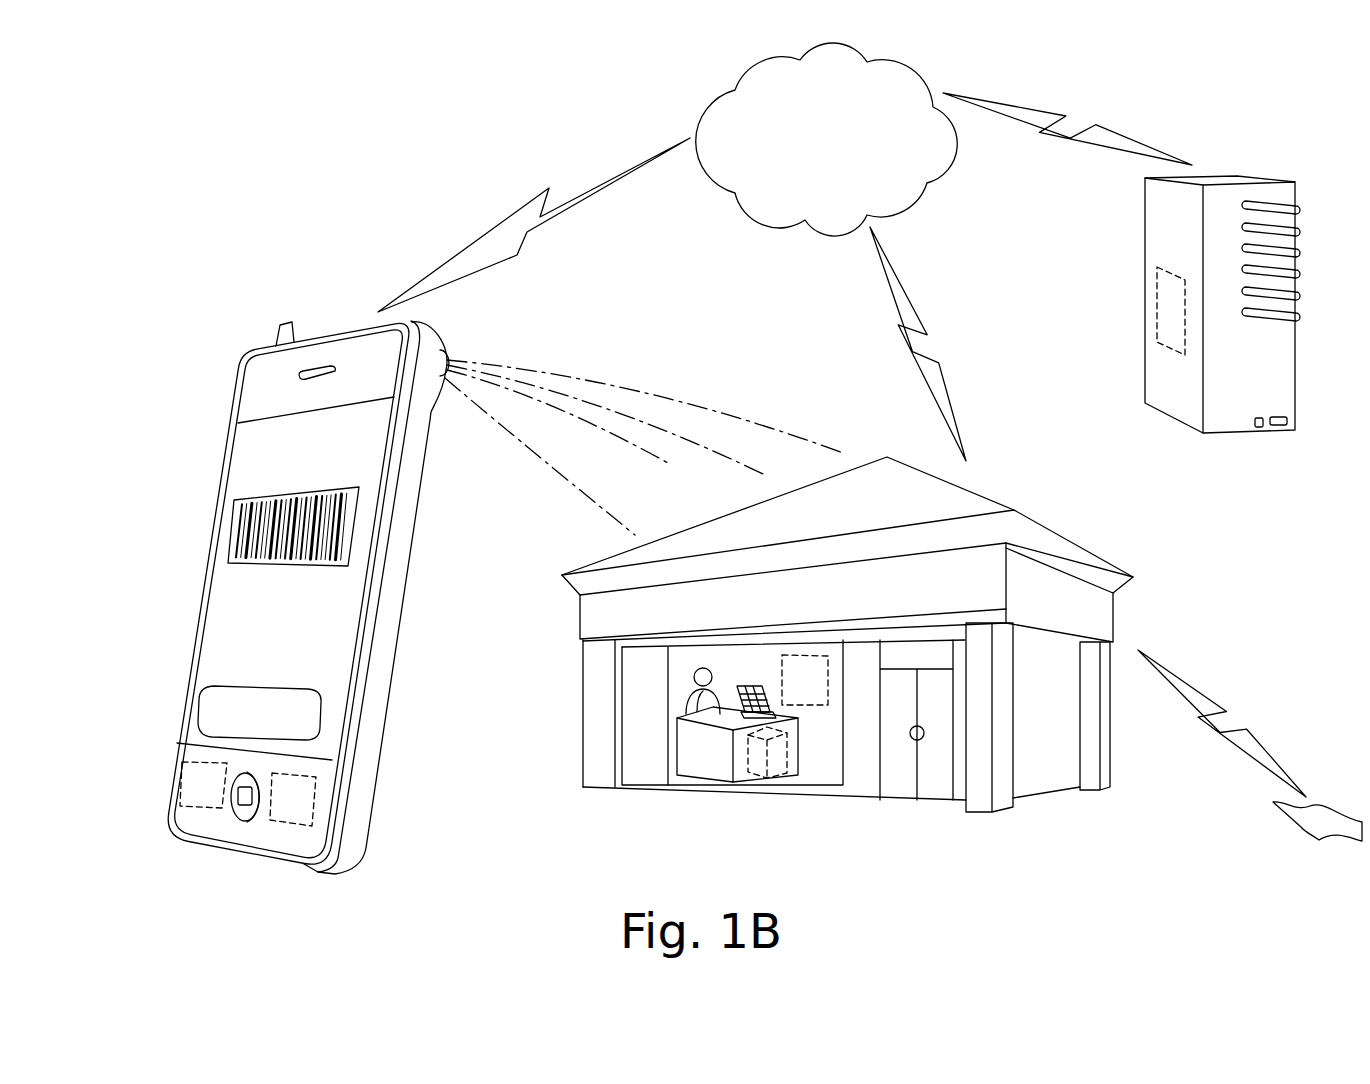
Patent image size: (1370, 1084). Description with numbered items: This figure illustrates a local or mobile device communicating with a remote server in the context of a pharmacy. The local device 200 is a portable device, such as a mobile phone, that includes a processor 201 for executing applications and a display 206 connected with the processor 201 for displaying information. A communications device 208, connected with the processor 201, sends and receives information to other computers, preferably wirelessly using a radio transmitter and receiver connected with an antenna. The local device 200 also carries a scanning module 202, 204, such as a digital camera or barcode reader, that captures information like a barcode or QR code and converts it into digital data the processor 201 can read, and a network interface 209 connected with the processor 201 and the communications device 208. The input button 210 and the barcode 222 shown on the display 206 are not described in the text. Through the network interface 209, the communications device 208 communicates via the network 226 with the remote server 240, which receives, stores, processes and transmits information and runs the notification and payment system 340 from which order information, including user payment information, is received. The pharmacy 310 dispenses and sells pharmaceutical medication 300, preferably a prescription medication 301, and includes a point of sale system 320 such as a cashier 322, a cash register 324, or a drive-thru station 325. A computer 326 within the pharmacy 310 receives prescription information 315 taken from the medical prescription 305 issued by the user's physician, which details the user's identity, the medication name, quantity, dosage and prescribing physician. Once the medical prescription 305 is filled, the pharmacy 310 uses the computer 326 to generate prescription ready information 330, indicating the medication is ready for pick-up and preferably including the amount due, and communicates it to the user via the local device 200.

The local device 200 is at (486, 586).
The processor 201 is at (320, 797).
The scanning module 202 is at (580, 595).
The light emitter 204 is at (443, 350).
The display 206 is at (238, 478).
The communications device 208 is at (277, 328).
The network interface 209 is at (203, 810).
The input button 210 is at (327, 713).
The barcode 222 is at (252, 563).
The network 226 is at (852, 197).
The remote server 240 is at (1185, 263).
The pharmaceutical medication 300 is at (864, 747).
The prescription medication 301 is at (828, 707).
The medical prescription 305 is at (1303, 826).
The pharmacy 310 is at (840, 661).
The prescription information 315 is at (1222, 707).
The point of sale system 320 is at (669, 786).
The cashier 322 is at (690, 693).
The cash register 324 is at (742, 686).
The drive-thru station 325 is at (707, 757).
The computer 326 is at (771, 775).
The prescription ready information 330 is at (925, 325).
The notification and payment system 340 is at (1170, 347).